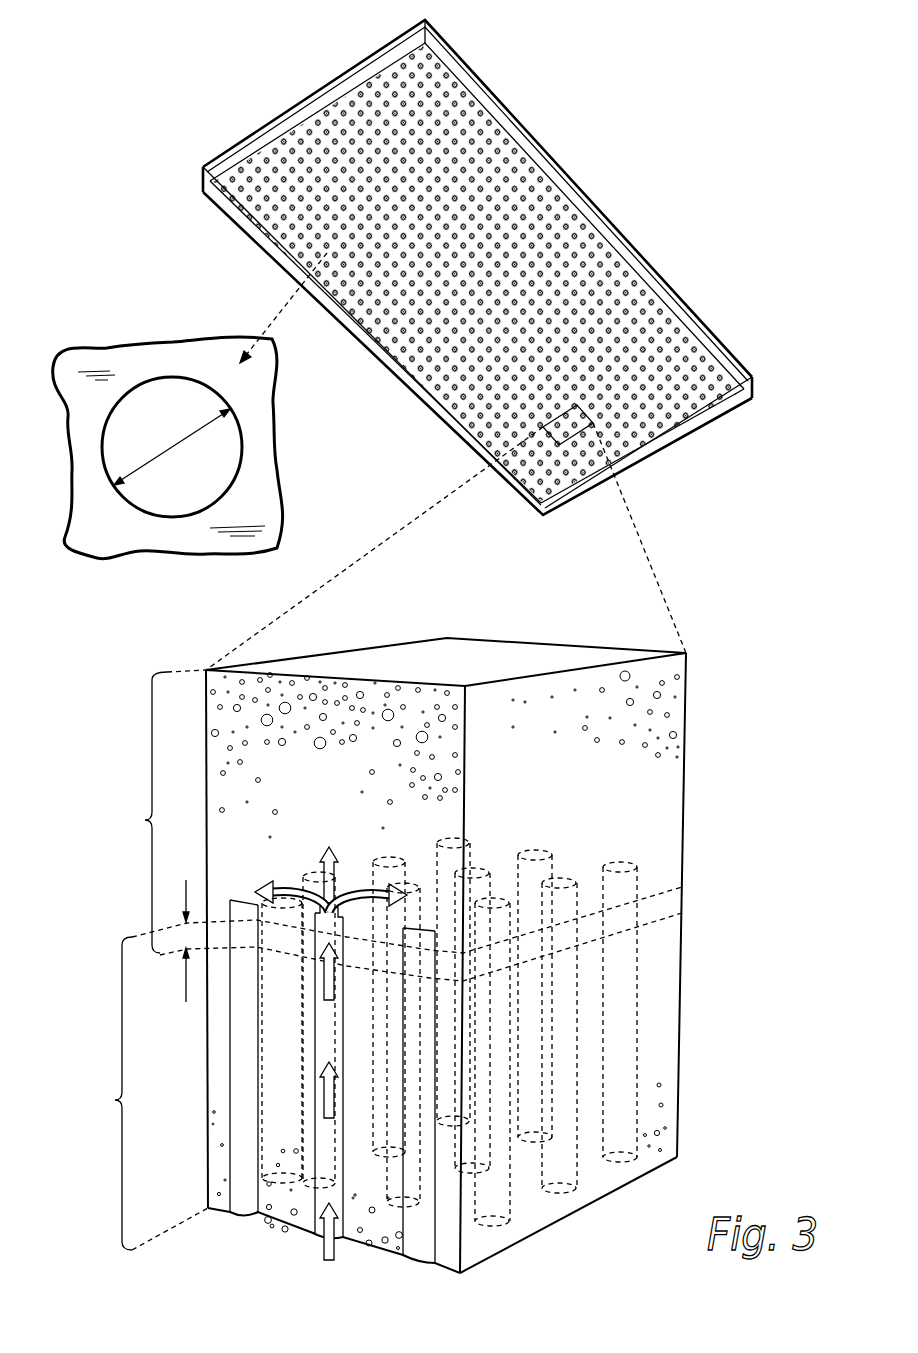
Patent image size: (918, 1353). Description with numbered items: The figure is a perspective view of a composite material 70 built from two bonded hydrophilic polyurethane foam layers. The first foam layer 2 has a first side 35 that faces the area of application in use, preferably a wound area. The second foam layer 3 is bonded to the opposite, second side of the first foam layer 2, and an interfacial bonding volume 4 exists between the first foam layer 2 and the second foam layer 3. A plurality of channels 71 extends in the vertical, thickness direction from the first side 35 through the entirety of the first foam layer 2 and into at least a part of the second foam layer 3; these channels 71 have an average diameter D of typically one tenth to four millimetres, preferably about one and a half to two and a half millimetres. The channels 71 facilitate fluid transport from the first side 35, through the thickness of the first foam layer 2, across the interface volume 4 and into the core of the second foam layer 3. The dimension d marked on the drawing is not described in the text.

The composite material 70 is at (729, 163).
The second foam layer 3 is at (587, 193).
The first foam layer 2 is at (667, 247).
The channels 71 is at (482, 118).
The first side 35 is at (695, 408).
The interfacial bonding volume 4 is at (700, 897).
The average diameter D is at (172, 447).
The layer thickness d is at (183, 941).